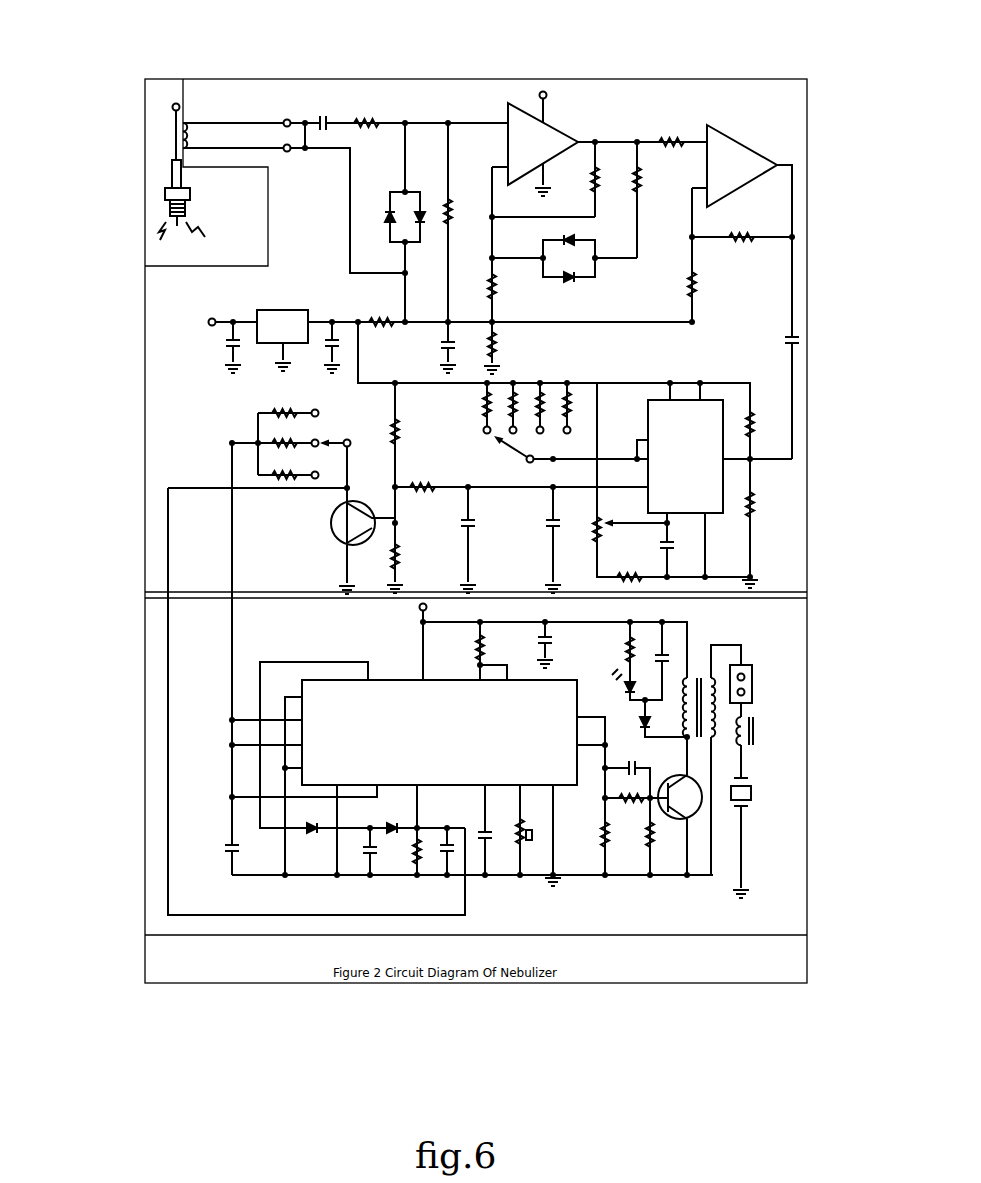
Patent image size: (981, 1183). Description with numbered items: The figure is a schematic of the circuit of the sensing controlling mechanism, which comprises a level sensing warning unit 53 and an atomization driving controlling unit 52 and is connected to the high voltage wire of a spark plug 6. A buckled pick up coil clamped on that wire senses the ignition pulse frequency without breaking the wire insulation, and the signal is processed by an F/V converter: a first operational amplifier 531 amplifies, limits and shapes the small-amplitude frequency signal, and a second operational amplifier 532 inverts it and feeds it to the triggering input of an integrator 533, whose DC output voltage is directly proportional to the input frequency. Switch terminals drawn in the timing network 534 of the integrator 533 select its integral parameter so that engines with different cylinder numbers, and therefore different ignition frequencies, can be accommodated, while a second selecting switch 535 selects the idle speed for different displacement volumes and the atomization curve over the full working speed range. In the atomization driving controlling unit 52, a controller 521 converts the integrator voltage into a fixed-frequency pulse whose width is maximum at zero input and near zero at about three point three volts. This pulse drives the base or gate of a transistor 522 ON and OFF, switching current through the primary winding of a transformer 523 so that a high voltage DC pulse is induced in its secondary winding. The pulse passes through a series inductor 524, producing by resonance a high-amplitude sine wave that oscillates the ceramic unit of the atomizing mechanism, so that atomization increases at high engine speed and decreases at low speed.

The spark plug 6 is at (135, 172).
The level sensing warning unit 53 is at (135, 322).
The first operational amplifier 531 is at (522, 120).
The second operational amplifier 532 is at (727, 145).
The integrator 533 is at (697, 483).
The timing resistor network with switch S1 534 is at (555, 367).
The second selecting switch 535 is at (250, 437).
The atomization driving controlling unit 52 is at (135, 738).
The controller 521 is at (567, 787).
The transistor 522 is at (686, 800).
The transformer 523 is at (713, 640).
The inductor 524 is at (765, 715).